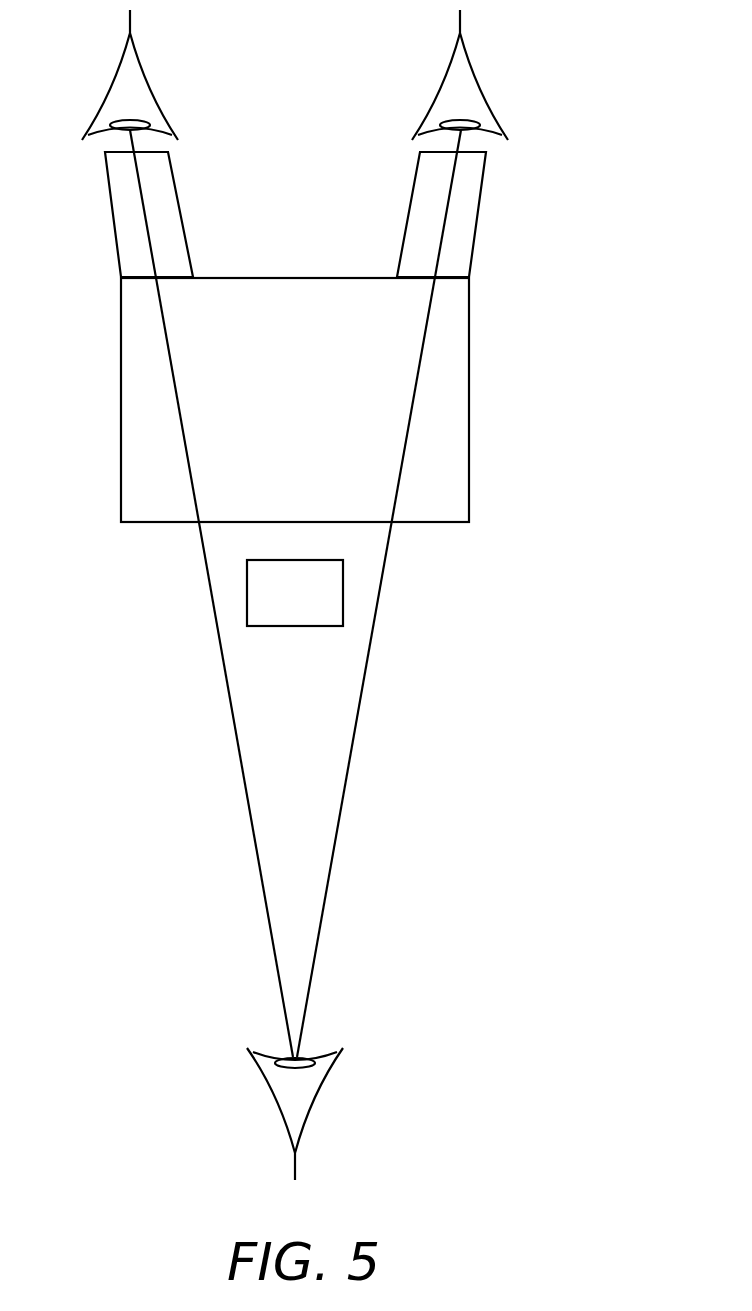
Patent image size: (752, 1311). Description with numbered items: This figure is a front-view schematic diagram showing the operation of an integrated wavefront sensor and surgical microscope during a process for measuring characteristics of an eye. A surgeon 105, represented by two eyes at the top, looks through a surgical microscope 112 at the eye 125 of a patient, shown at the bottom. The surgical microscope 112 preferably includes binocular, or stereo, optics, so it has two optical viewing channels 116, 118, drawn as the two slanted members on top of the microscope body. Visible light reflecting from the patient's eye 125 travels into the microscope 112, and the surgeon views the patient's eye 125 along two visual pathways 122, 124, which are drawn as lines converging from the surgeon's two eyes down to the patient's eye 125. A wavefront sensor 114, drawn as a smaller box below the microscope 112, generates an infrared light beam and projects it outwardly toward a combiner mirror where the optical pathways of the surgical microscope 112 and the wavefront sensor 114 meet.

The surgeon 105 is at (116, 79).
The surgical microscope 112 is at (473, 370).
The wavefront sensor 114 is at (346, 602).
The optical viewing channel 116 is at (112, 200).
The optical viewing channel 118 is at (481, 198).
The visual pathway 122 is at (248, 810).
The visual pathway 124 is at (349, 772).
The eye 125 is at (282, 1125).